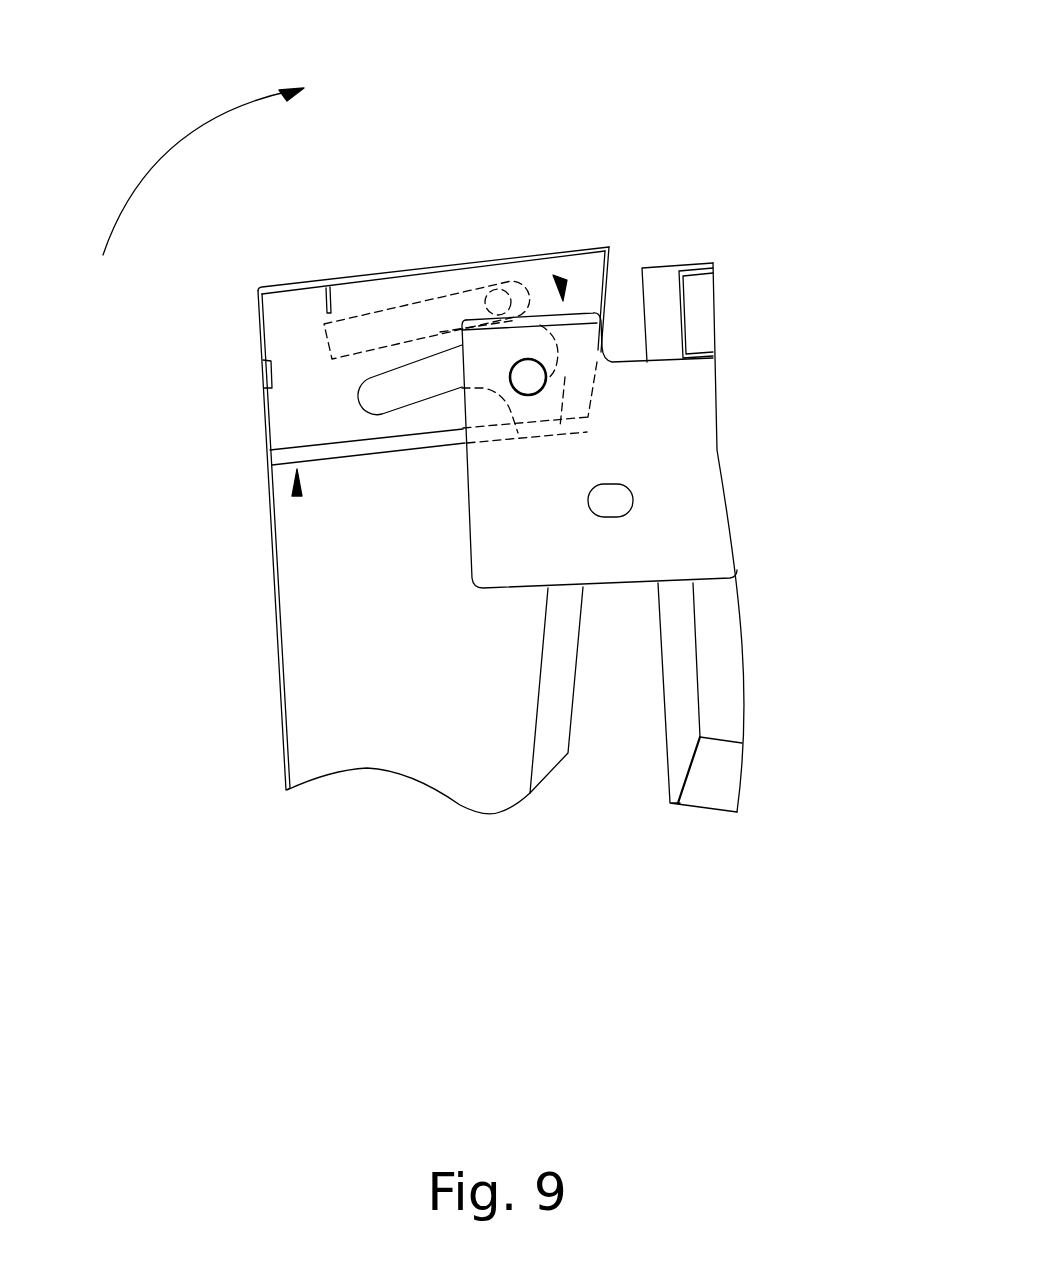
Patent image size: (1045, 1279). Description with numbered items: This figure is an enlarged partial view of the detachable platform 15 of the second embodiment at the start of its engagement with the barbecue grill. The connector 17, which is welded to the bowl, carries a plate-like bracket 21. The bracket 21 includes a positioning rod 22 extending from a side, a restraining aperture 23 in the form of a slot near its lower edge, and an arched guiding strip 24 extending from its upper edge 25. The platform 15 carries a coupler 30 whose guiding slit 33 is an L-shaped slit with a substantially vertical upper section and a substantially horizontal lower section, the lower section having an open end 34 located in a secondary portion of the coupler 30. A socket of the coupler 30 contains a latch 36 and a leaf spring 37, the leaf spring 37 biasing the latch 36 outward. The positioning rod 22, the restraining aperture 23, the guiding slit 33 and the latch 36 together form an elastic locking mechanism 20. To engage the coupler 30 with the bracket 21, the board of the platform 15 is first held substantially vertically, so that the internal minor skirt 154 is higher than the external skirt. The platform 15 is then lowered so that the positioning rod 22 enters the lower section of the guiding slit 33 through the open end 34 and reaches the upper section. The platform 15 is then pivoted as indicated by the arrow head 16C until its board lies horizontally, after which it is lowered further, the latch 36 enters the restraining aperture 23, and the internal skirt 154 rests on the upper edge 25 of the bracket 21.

The arrow head 16C is at (177, 140).
The platform 15 is at (413, 529).
The minor skirt 154 is at (295, 278).
The coupler 30 is at (297, 499).
The guiding slit 33 is at (360, 393).
The guiding strip 24 is at (455, 326).
The leaf spring 37 is at (372, 320).
The latch 36 is at (498, 300).
The elastic locking mechanism 20 is at (555, 275).
The bracket 21 is at (665, 548).
The positioning rod 22 is at (528, 377).
The open end 34 is at (540, 430).
The restraining aperture 23 is at (617, 500).
The upper edge 25 is at (633, 362).
The connector 17 is at (720, 660).